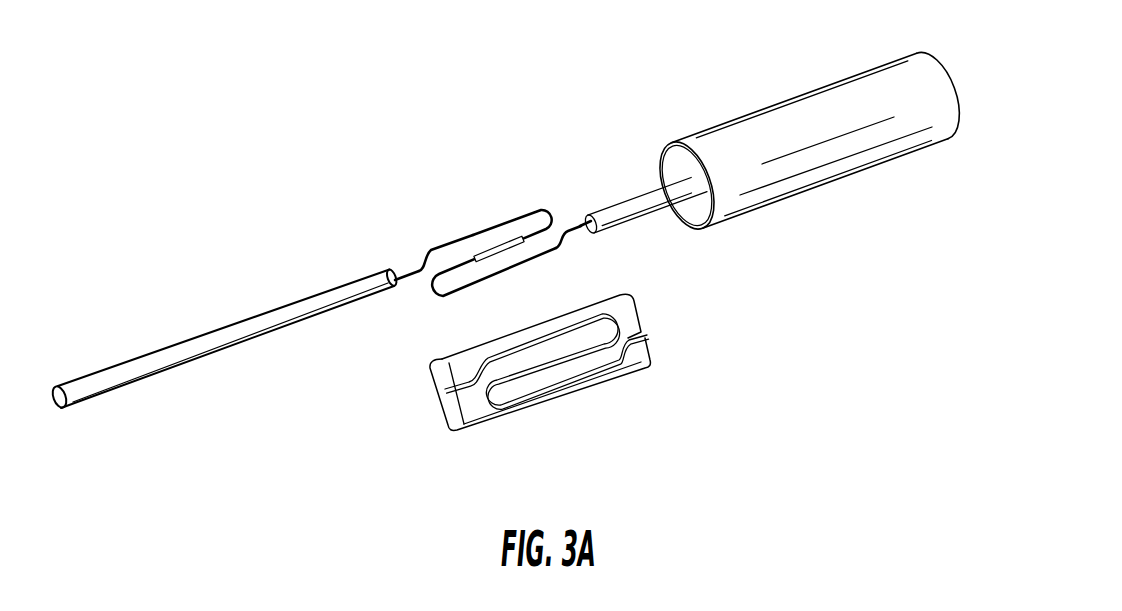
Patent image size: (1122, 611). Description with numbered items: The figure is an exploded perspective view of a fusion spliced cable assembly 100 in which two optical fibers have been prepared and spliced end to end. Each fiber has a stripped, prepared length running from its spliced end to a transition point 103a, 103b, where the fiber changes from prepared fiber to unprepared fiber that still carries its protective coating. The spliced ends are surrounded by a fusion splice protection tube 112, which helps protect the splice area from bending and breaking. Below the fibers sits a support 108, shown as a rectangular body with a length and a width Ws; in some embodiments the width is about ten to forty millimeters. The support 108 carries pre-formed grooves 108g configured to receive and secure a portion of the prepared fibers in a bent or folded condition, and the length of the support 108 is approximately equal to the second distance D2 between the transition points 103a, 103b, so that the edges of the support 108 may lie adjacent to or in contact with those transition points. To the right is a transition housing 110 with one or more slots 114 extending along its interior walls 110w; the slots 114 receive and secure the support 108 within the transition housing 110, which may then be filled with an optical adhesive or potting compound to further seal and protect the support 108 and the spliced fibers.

The fusion spliced cable assembly 100 is at (177, 129).
The transition point of the first optical fiber 103a is at (393, 273).
The fusion splice protection tube 112 is at (498, 246).
The transition point of the second optical fiber 103b is at (589, 214).
The transition housing 110 is at (791, 146).
The interior wall of the transition housing 110w is at (686, 212).
The slot 114 is at (674, 141).
The support 108 is at (568, 396).
The pre-formed groove 108g is at (605, 370).
The second distance D2 is at (589, 259).
The width of the support Ws is at (427, 428).